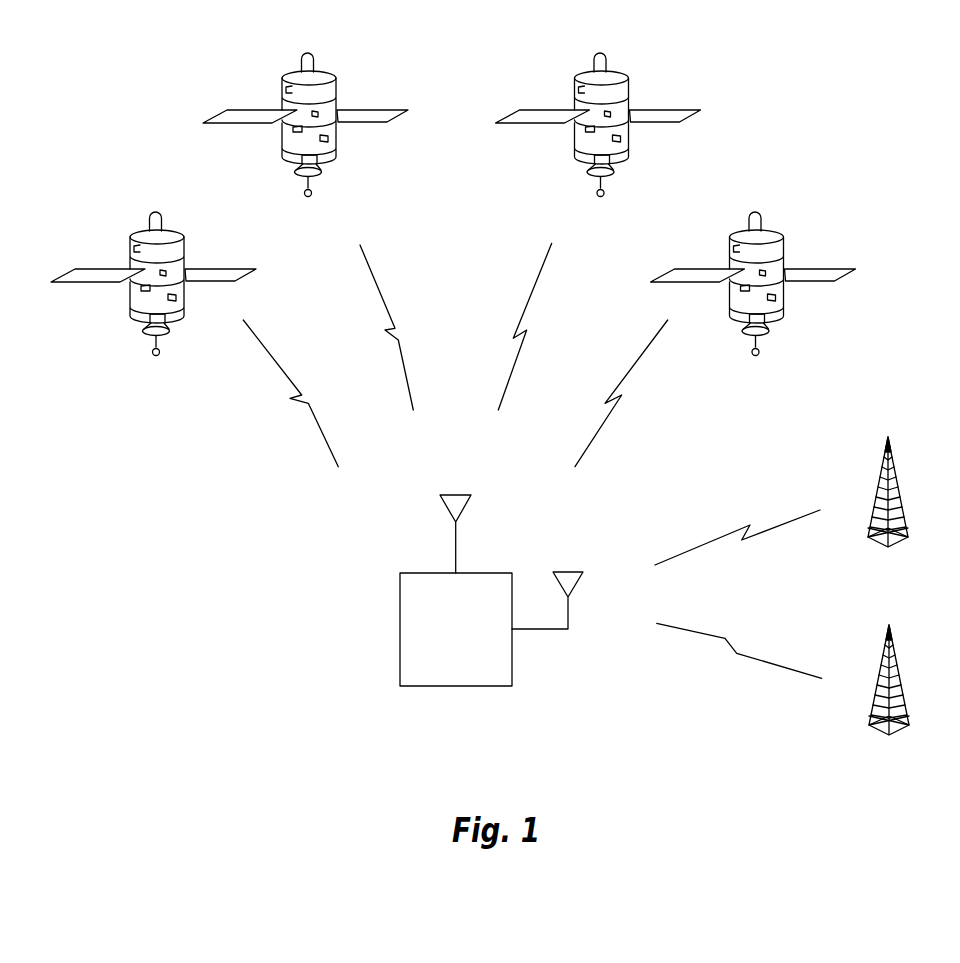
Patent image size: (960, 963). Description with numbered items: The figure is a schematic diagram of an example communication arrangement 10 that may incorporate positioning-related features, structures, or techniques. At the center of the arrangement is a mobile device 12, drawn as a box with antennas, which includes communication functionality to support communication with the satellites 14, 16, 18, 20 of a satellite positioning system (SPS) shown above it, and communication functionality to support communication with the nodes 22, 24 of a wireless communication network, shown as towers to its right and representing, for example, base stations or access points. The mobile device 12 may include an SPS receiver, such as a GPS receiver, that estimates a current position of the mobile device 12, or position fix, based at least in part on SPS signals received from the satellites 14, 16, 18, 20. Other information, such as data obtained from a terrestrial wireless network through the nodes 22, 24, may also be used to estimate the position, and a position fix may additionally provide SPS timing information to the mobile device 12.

The communication arrangement 10 is at (840, 83).
The mobile device 12 is at (400, 590).
The satellite 14 is at (130, 247).
The satellite 16 is at (281, 87).
The satellite 18 is at (629, 87).
The satellite 20 is at (784, 245).
The node 22 is at (892, 457).
The node 24 is at (893, 644).